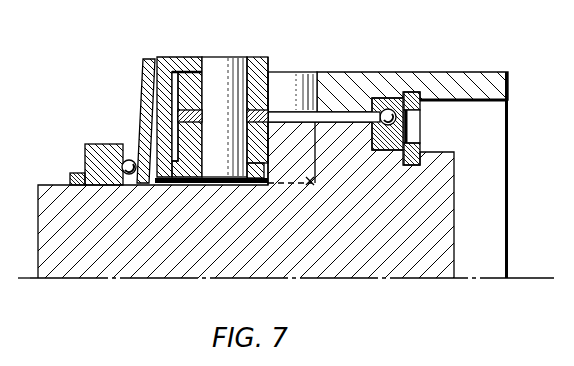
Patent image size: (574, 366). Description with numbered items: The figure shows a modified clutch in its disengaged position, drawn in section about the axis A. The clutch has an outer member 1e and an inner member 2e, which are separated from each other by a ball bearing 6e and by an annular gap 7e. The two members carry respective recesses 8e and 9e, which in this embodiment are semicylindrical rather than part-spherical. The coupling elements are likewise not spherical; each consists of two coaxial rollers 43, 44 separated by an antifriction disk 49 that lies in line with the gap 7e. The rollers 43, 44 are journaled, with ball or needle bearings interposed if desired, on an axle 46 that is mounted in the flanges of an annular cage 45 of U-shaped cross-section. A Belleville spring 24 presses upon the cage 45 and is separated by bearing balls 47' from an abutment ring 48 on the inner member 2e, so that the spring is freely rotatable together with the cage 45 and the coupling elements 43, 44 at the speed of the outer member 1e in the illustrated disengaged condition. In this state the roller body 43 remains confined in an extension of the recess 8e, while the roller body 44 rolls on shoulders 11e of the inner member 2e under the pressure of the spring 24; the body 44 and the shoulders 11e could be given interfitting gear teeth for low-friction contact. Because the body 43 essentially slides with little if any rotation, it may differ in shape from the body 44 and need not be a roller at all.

The outer member 1e is at (469, 72).
The inner member 2e is at (417, 264).
The ball bearing 6e is at (404, 116).
The annular gap 7e is at (355, 117).
The recess 8e is at (310, 72).
The recess 9e is at (314, 183).
The shoulders 11e is at (262, 165).
The Belleville spring 24 is at (143, 68).
The roller 43 is at (270, 75).
The roller 44 is at (192, 165).
The annular cage 45 is at (169, 57).
The axle 46 is at (220, 57).
The bearing balls 47' is at (111, 141).
The abutment ring 48 is at (85, 155).
The antifriction disk 49 is at (184, 117).
The axis A is at (539, 278).